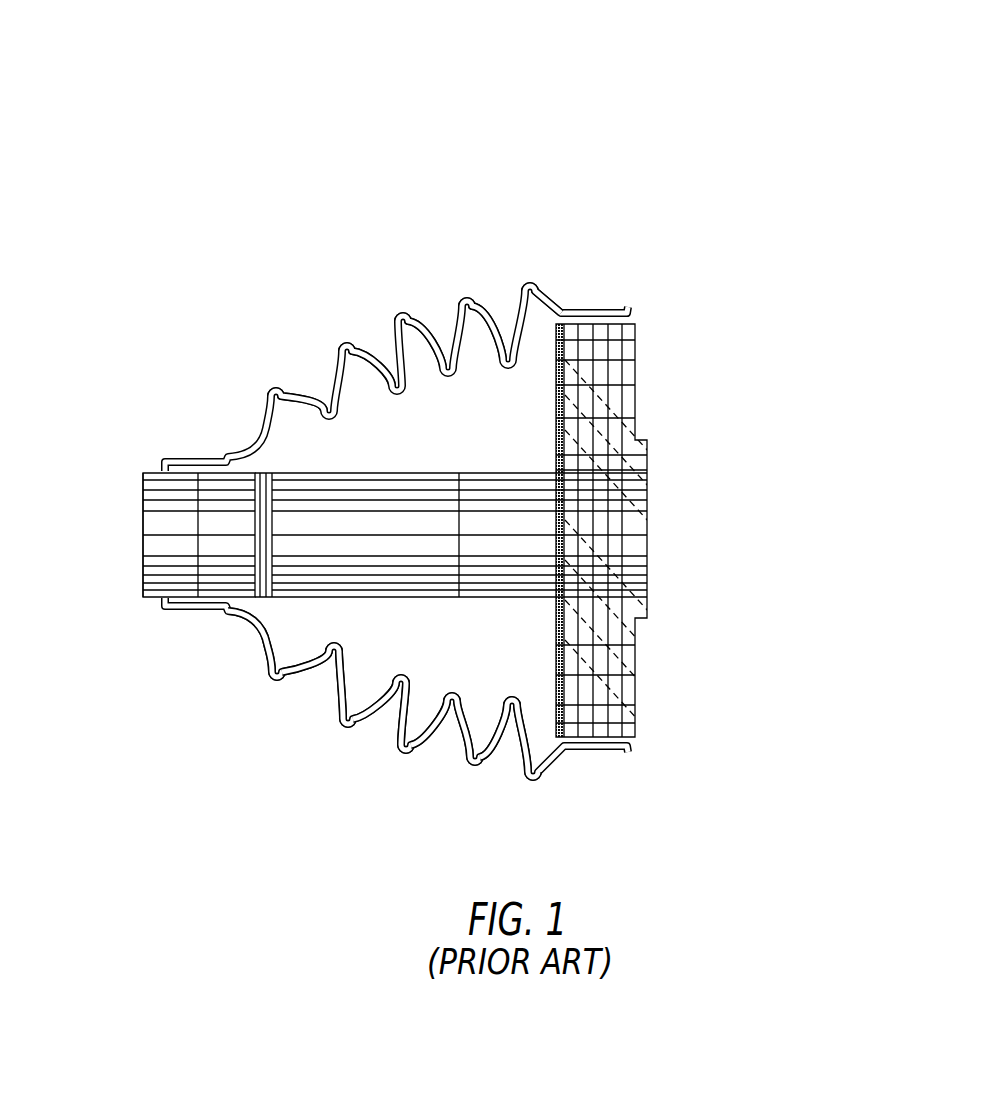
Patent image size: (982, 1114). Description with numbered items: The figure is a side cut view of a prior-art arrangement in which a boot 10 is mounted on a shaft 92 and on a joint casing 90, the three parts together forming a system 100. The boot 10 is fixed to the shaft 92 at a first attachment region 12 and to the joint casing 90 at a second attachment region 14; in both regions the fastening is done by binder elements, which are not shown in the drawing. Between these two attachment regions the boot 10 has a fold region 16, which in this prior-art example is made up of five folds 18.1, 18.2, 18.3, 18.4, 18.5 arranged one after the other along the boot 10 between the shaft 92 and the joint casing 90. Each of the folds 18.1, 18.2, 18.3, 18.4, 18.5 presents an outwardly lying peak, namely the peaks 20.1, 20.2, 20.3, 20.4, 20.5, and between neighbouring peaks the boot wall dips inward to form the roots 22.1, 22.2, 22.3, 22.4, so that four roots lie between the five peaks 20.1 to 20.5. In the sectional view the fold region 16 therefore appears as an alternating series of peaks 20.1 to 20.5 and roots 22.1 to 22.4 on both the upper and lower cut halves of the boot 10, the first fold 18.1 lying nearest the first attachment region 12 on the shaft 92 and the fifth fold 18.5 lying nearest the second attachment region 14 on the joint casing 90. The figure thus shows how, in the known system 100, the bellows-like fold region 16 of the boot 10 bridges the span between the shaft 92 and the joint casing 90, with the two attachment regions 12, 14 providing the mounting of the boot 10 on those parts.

The system 100 is at (609, 98).
The boot 10 is at (396, 329).
The first attachment region 12 is at (189, 432).
The second attachment region 14 is at (606, 295).
The fold region 16 is at (396, 770).
The joint casing 90 is at (652, 353).
The shaft 92 is at (132, 538).
The fold 18.1 is at (278, 690).
The fold 18.2 is at (348, 736).
The fold 18.3 is at (404, 764).
The fold 18.4 is at (476, 775).
The fold 18.5 is at (540, 794).
The peak 20.1 is at (275, 387).
The peak 20.2 is at (346, 343).
The peak 20.3 is at (403, 313).
The peak 20.4 is at (469, 297).
The peak 20.5 is at (532, 282).
The root 22.1 is at (337, 643).
The root 22.2 is at (402, 674).
The root 22.3 is at (451, 692).
The root 22.4 is at (513, 696).